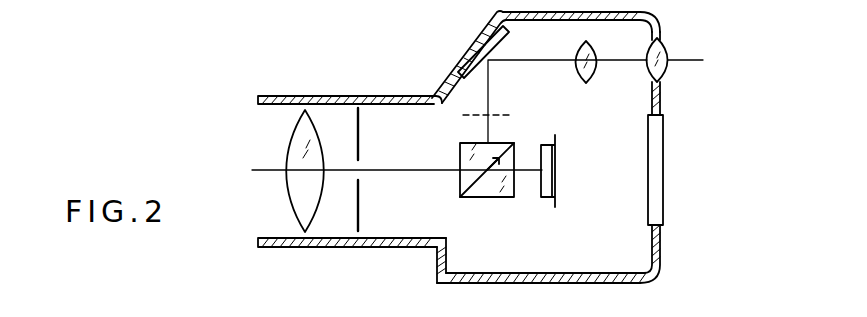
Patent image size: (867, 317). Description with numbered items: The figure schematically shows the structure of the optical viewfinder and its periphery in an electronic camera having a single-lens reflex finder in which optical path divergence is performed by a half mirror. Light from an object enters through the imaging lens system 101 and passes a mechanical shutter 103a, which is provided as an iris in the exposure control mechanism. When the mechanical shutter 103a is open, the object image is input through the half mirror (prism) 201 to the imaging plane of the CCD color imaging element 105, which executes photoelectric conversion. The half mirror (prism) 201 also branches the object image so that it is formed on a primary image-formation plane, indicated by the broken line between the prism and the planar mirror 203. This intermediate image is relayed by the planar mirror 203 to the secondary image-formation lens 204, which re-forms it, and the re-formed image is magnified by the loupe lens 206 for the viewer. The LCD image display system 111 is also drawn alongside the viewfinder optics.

The imaging lens system 101 is at (296, 150).
The mechanical shutter 103a is at (357, 116).
The half mirror (prism) 201 is at (473, 200).
The CCD color imaging element 105 is at (546, 134).
The planar mirror 203 is at (508, 32).
The secondary image-formation lens 204 is at (580, 70).
The loupe lens 206 is at (667, 47).
The LCD image display system 111 is at (663, 173).